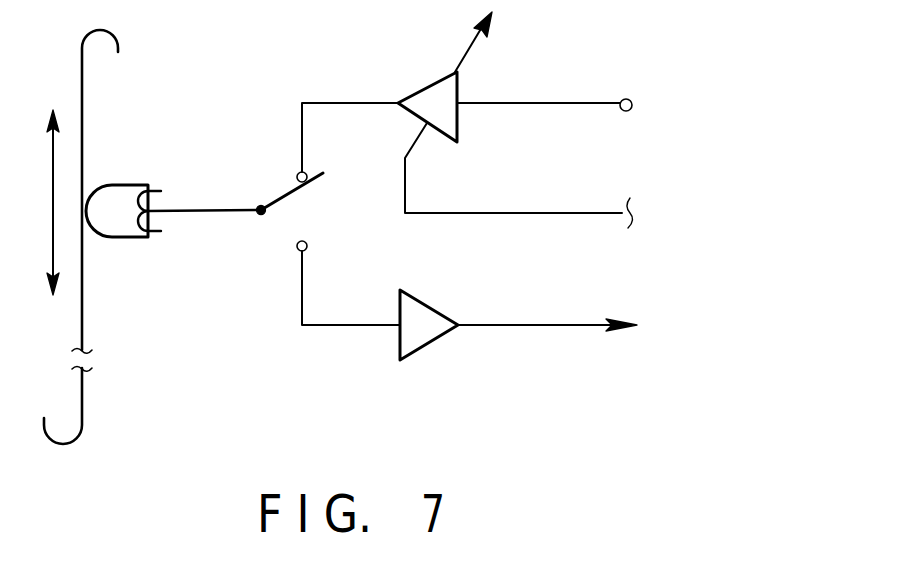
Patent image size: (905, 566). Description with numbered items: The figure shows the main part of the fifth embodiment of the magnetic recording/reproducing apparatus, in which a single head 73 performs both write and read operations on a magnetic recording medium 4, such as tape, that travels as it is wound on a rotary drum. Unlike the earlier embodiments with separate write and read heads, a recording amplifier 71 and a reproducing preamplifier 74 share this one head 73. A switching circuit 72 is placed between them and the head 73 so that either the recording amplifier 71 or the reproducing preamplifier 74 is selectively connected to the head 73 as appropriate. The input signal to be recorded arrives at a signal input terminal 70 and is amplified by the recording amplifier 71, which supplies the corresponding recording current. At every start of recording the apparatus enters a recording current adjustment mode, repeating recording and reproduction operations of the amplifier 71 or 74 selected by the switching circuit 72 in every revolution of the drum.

The magnetic recording medium 4 is at (84, 398).
The signal input terminal 70 is at (624, 112).
The recording amplifier 71 is at (427, 87).
The switching circuit 72 is at (276, 198).
The head 73 is at (121, 229).
The reproducing preamplifier 74 is at (432, 341).